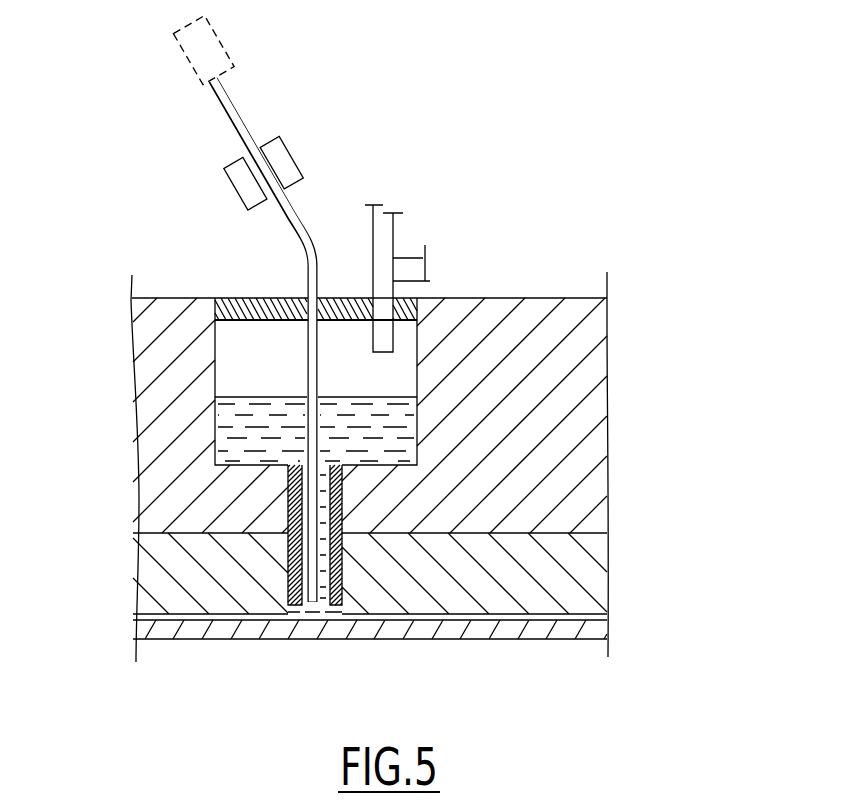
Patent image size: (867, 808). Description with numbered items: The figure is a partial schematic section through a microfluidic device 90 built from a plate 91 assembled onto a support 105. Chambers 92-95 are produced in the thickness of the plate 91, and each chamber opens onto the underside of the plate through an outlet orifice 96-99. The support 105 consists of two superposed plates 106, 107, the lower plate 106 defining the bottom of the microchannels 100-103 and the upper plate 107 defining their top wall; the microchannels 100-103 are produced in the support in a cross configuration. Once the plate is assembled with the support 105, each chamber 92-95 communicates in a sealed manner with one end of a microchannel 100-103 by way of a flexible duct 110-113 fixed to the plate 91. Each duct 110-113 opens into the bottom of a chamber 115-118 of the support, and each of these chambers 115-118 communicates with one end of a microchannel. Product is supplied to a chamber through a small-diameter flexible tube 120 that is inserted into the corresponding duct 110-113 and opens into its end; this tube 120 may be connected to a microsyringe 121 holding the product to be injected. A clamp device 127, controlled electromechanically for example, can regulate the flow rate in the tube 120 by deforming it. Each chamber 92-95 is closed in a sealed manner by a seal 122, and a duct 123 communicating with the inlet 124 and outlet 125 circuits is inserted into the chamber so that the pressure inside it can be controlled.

The microfluidic device 90 is at (520, 248).
The plate 91 is at (600, 432).
The chambers 92-95 is at (238, 350).
The outlet orifices 96-99 is at (287, 532).
The microchannels 100-103 is at (562, 614).
The support 105 is at (622, 572).
The plate defining bottom of microchannels 106 is at (597, 632).
The plate defining top wall of microchannels 107 is at (600, 546).
The flexible ducts 110-113 is at (290, 577).
The chambers of the support 115-118 is at (317, 613).
The flexible tube 120 is at (295, 223).
The microsyringe 121 is at (218, 53).
The seal 122 is at (249, 300).
The duct 123 is at (382, 293).
The inlet circuit 124 is at (383, 211).
The outlet circuit 125 is at (408, 257).
The clamp device 127 is at (290, 147).